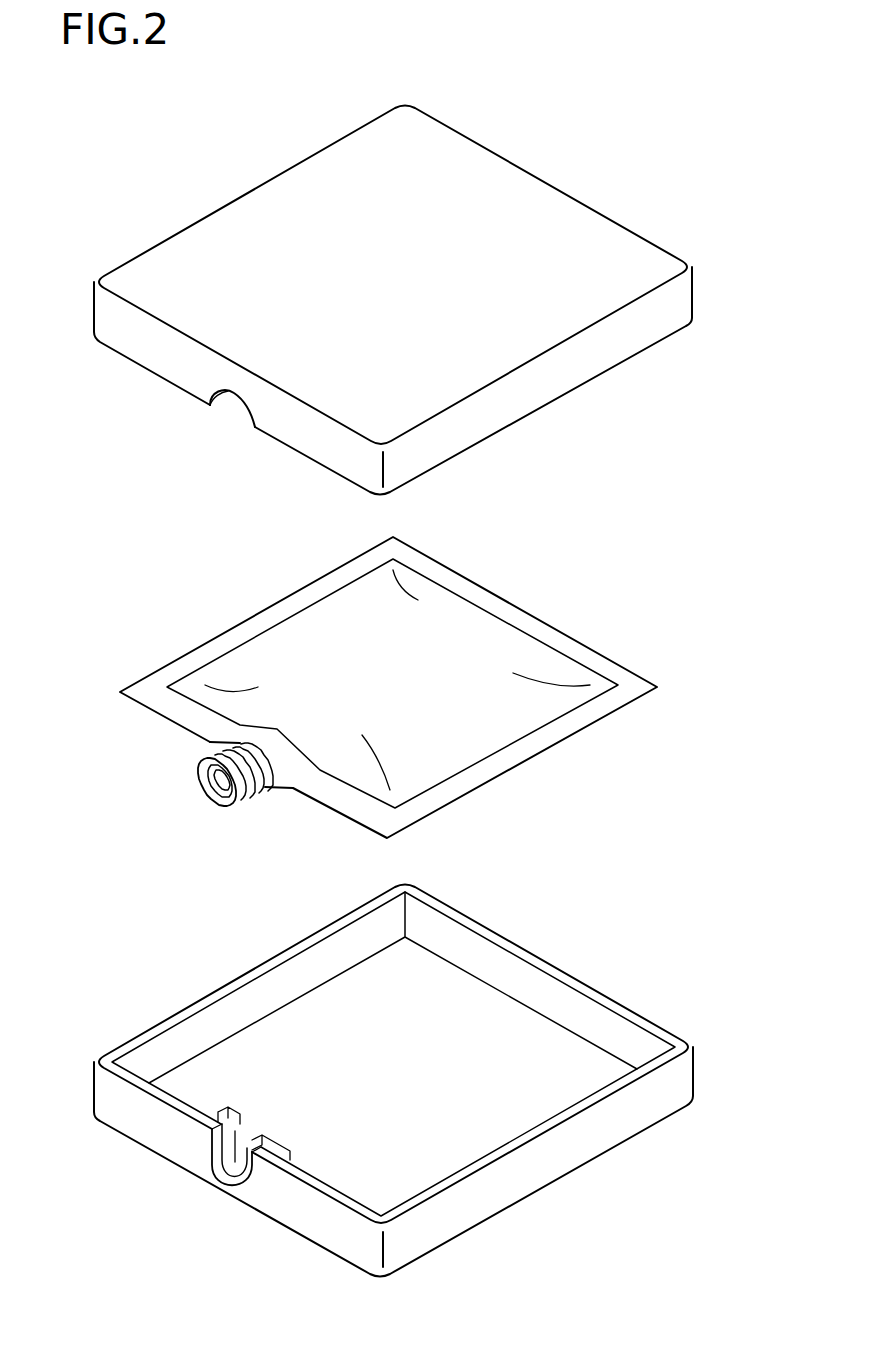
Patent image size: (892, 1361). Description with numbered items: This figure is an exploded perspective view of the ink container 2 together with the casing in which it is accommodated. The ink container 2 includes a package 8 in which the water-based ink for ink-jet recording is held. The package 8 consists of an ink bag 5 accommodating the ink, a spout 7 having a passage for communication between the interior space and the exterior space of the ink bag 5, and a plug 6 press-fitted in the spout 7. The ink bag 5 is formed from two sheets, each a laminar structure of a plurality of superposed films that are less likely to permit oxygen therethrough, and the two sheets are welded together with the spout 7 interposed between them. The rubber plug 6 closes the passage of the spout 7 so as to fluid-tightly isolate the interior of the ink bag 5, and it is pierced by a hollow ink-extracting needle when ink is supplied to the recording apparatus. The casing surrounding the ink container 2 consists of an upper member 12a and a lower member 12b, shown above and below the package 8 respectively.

The ink container 2 is at (426, 657).
The ink bag 5 is at (255, 655).
The plug 6 is at (220, 801).
The spout 7 is at (242, 795).
The package 8 is at (388, 657).
The upper member 12a is at (666, 132).
The lower member 12b is at (672, 891).